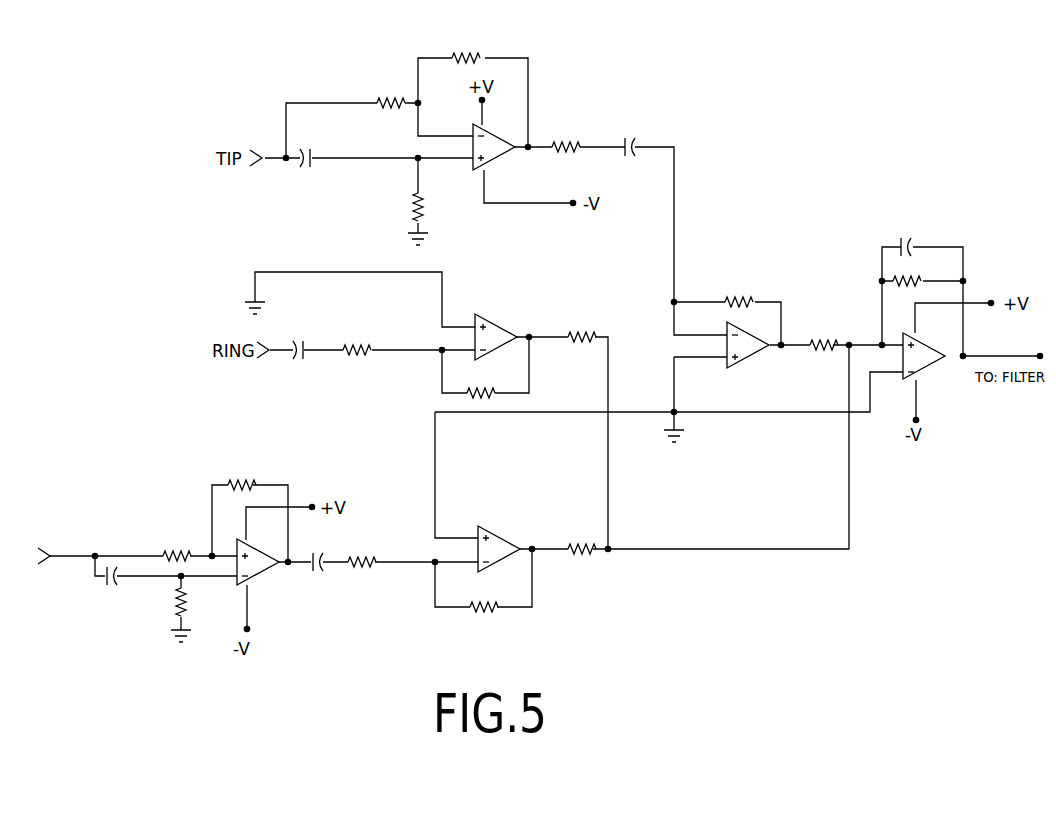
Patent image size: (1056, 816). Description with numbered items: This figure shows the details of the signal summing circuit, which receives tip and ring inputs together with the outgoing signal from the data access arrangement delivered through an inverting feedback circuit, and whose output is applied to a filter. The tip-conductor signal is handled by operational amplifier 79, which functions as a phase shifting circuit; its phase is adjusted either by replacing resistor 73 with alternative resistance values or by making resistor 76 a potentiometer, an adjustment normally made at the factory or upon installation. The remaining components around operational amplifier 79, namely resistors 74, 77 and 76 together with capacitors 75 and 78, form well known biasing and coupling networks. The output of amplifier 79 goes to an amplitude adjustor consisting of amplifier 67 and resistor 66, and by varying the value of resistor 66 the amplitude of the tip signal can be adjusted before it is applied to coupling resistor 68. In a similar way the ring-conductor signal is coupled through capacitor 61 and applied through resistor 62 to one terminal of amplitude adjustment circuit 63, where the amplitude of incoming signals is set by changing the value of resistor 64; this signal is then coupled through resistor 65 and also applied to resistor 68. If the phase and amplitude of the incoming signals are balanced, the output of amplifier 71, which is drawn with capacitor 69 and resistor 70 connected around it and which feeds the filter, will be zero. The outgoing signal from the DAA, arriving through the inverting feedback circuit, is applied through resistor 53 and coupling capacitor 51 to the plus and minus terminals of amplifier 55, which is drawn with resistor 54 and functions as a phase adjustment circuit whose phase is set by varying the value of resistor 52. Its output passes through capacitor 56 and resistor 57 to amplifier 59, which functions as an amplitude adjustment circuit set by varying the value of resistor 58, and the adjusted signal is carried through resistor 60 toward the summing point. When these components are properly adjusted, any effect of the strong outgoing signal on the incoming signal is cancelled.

The coupling capacitor 51 is at (115, 591).
The resistor 52 is at (170, 602).
The resistor 53 is at (177, 545).
The resistor 54 is at (242, 474).
The amplifier 55 is at (258, 572).
The capacitor 56 is at (322, 582).
The resistor 57 is at (362, 552).
The resistor 58 is at (485, 620).
The amplifier 59 is at (497, 535).
The resistor 60 is at (582, 562).
The capacitor 61 is at (300, 337).
The resistor 62 is at (357, 339).
The amplitude adjustment circuit 63 is at (493, 322).
The resistor 64 is at (481, 403).
The resistor 65 is at (582, 325).
The resistor 66 is at (739, 292).
The amplifier 67 is at (750, 360).
The coupling resistor 68 is at (824, 335).
The capacitor 69 is at (910, 234).
The resistor 70 is at (922, 281).
The amplifier 71 is at (928, 372).
The resistor 73 is at (466, 48).
The resistor 74 is at (391, 94).
The capacitor 75 is at (306, 147).
The resistor 76 is at (407, 207).
The resistor 77 is at (566, 158).
The capacitor 78 is at (630, 133).
The operational amplifier 79 is at (495, 133).